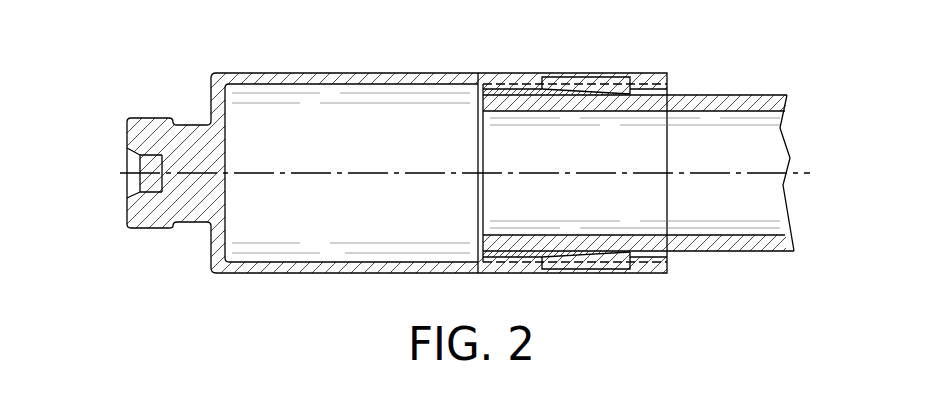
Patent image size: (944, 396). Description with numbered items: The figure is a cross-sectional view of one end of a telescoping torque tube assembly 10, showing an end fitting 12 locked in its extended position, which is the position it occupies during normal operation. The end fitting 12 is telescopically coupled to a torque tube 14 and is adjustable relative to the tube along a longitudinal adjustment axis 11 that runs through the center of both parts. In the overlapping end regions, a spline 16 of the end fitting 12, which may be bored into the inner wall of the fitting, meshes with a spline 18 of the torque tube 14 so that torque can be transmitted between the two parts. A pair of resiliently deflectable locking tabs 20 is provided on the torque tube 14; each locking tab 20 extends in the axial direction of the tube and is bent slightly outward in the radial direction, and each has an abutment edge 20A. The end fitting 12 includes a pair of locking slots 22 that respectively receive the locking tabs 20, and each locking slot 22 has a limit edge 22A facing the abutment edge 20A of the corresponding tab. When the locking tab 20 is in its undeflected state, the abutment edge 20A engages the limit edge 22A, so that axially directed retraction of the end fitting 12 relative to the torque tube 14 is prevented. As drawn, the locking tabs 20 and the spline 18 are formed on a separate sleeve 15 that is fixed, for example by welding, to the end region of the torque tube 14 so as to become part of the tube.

The telescoping torque tube assembly 10 is at (745, 61).
The longitudinal adjustment axis 11 is at (653, 173).
The end fitting 12 is at (295, 73).
The torque tube 14 is at (714, 252).
The sleeve 15 is at (667, 88).
The spline 16 is at (484, 113).
The spline 18 is at (500, 84).
The locking tab 20 is at (588, 91).
The abutment edge 20A is at (542, 95).
The locking slot 22 is at (568, 77).
The limit edge 22A is at (544, 89).